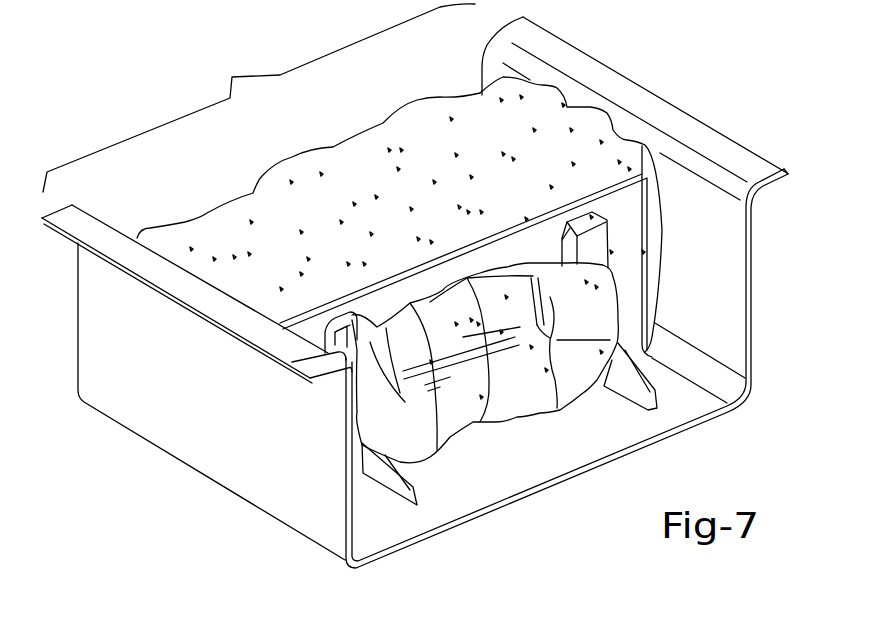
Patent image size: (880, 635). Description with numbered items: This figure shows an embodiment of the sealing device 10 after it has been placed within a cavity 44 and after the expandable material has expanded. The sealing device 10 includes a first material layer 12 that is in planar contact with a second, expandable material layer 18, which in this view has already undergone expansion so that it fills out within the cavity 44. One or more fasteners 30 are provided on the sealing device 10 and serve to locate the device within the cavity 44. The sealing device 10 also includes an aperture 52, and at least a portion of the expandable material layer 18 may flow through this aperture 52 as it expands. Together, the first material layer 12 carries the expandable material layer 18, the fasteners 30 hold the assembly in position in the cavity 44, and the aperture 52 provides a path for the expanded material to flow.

The sealing device 10 is at (655, 268).
The first material layer 12 is at (546, 262).
The expandable material layer 18 is at (399, 214).
The fastener 30 is at (293, 361).
The cavity 44 is at (259, 98).
The aperture 52 is at (470, 358).